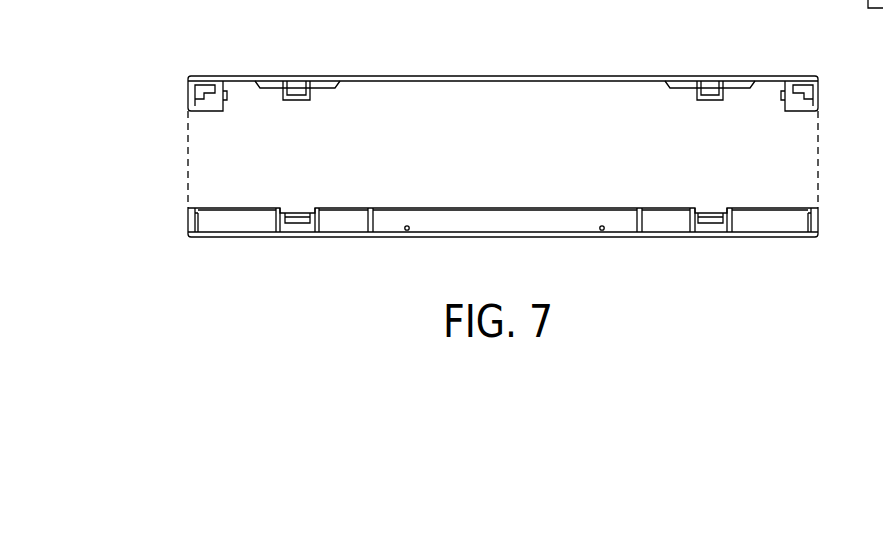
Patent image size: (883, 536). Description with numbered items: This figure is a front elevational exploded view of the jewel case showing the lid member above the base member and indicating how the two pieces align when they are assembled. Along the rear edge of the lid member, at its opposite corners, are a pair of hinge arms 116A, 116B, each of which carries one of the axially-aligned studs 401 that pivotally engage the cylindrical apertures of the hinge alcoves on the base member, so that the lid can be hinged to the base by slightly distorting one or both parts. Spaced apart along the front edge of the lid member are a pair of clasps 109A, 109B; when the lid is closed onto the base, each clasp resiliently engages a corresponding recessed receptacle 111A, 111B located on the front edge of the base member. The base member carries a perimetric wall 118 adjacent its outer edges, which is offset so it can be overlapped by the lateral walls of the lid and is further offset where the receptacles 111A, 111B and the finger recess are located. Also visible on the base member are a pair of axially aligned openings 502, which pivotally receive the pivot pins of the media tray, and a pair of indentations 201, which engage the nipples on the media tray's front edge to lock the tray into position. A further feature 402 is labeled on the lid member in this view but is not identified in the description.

The top cover plate 402 is at (488, 80).
The axially-aligned studs 401 is at (226, 91).
The hinge arm 116B is at (210, 112).
The hinge arm 116A is at (798, 112).
The clasp 109B is at (298, 101).
The clasp 109A is at (708, 101).
The perimetric wall 118 is at (347, 220).
The recessed receptacle 111B is at (298, 225).
The recessed receptacle 111A is at (710, 225).
The axially aligned openings 502 is at (398, 236).
The indentations 201 is at (597, 236).